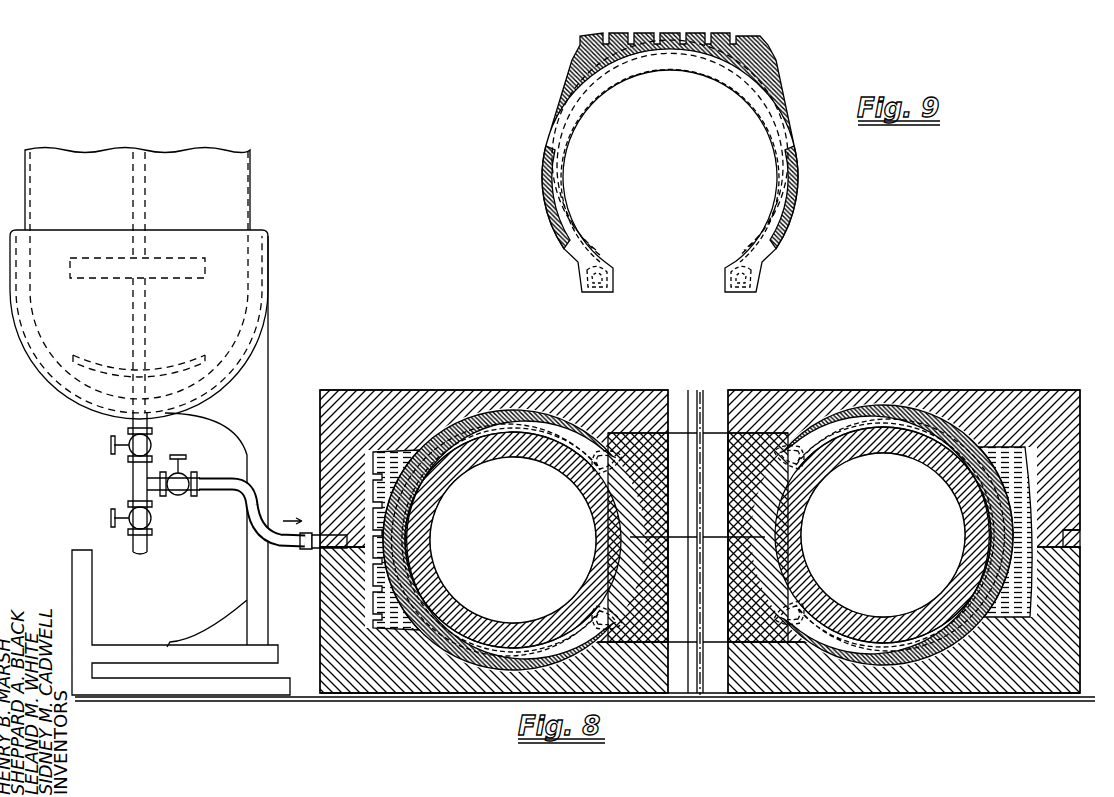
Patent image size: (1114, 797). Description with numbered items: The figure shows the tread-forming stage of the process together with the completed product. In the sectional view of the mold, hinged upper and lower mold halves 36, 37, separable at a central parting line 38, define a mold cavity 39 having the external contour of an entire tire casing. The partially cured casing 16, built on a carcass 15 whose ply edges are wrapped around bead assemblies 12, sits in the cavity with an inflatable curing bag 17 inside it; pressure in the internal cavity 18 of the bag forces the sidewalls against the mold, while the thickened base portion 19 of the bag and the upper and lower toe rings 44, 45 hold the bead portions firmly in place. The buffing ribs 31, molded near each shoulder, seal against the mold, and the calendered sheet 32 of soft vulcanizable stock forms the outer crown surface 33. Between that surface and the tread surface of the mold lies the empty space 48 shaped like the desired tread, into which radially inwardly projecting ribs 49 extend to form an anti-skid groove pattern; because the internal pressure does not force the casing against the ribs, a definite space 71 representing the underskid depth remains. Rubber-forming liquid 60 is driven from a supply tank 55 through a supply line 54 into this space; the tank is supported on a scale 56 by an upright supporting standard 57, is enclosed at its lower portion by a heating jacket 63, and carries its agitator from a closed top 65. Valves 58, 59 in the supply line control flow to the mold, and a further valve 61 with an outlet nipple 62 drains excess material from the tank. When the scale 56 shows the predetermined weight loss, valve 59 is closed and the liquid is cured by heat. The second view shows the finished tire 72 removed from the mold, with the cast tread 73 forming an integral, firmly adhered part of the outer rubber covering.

In FIG. 9, the bead assemblies 12 is at (590, 279).
In FIG. 9, the carcass 15 is at (745, 119).
In FIG. 8, the casing 16 is at (864, 412).
In FIG. 8, the curing bag 17 is at (868, 455).
In FIG. 8, the internal cavity 18 is at (541, 618).
In FIG. 8, the base portion 19 is at (606, 565).
In FIG. 9, the buffing ribs 31 is at (541, 143).
In FIG. 8, the buffing ribs 31 is at (470, 418).
In FIG. 8, the calendered sheet 32 is at (431, 440).
In FIG. 8, the outer crown surface 33 is at (414, 446).
In FIG. 8, the upper mold half 36 is at (1070, 375).
In FIG. 8, the lower mold half 37 is at (1028, 678).
In FIG. 8, the parting line 38 is at (1054, 527).
In FIG. 8, the mold cavity 39 is at (544, 420).
In FIG. 8, the upper toe ring 44 is at (754, 523).
In FIG. 8, the lower toe ring 45 is at (754, 565).
In FIG. 8, the empty space 48 is at (1031, 587).
In FIG. 8, the ribs 49 is at (374, 500).
In FIG. 8, the supply line 54 is at (320, 549).
In FIG. 8, the supply tank 55 is at (241, 179).
In FIG. 8, the scale 56 is at (92, 608).
In FIG. 8, the supporting standard 57 is at (268, 418).
In FIG. 8, the valve 58 is at (128, 456).
In FIG. 8, the valve 59 is at (186, 476).
In FIG. 8, the rubber-forming liquid 60 is at (392, 625).
In FIG. 8, the valve 61 is at (151, 518).
In FIG. 8, the outlet nipple 62 is at (146, 556).
In FIG. 8, the heating jacket 63 is at (262, 258).
In FIG. 8, the closed top 65 is at (184, 256).
In FIG. 8, the space 71 is at (386, 452).
In FIG. 9, the finished tire 72 is at (548, 86).
In FIG. 9, the cast tread 73 is at (757, 44).